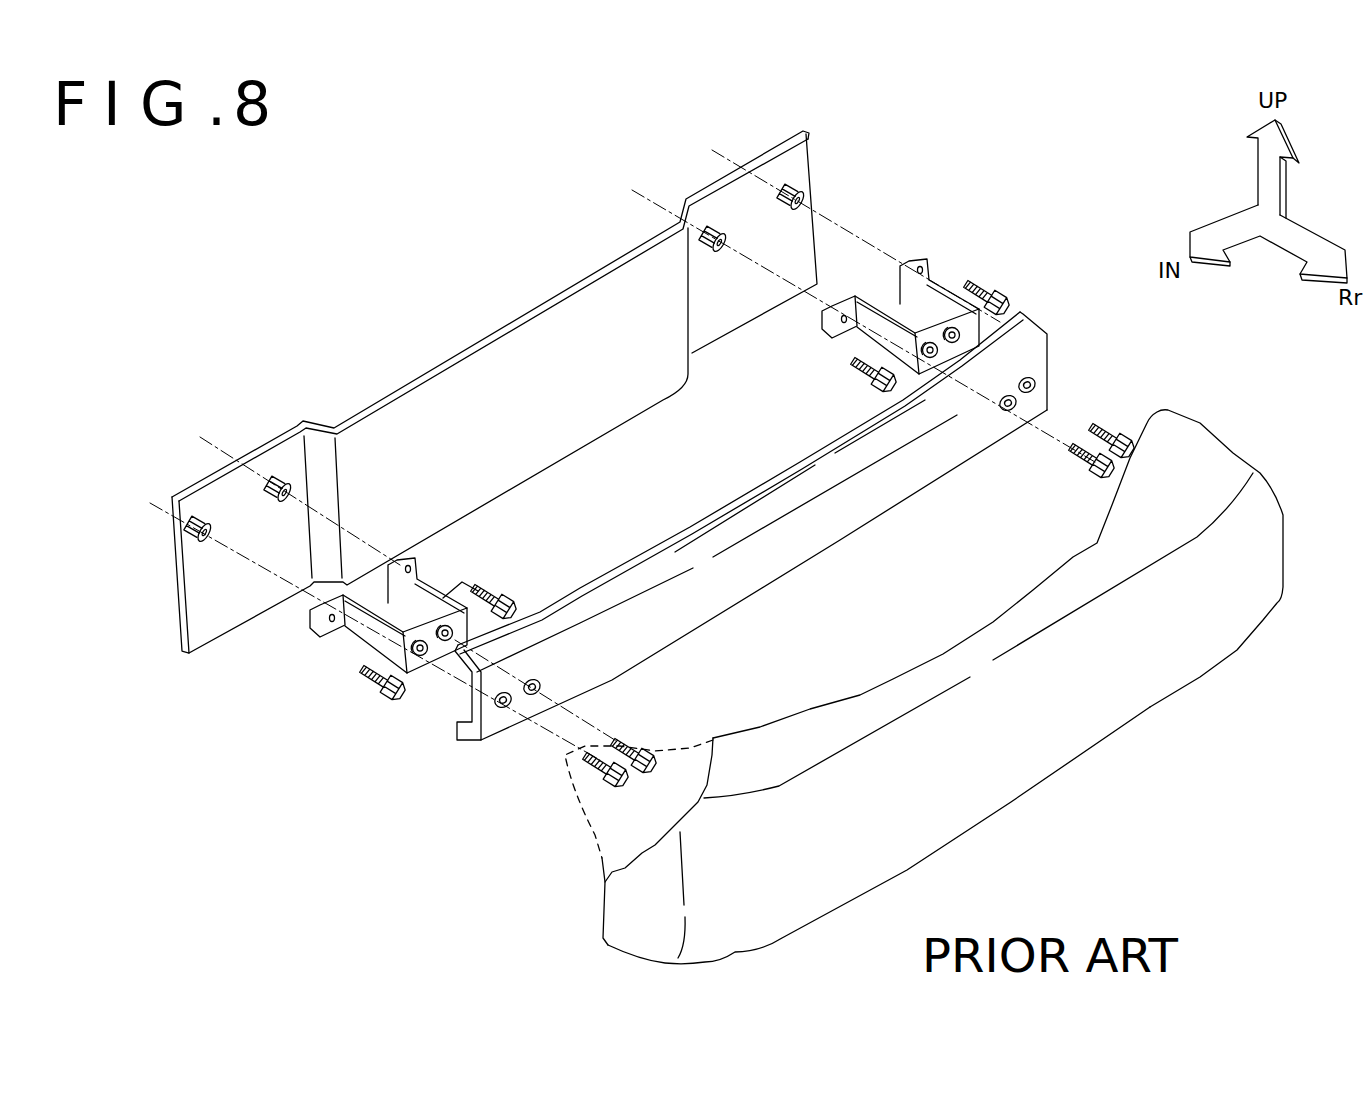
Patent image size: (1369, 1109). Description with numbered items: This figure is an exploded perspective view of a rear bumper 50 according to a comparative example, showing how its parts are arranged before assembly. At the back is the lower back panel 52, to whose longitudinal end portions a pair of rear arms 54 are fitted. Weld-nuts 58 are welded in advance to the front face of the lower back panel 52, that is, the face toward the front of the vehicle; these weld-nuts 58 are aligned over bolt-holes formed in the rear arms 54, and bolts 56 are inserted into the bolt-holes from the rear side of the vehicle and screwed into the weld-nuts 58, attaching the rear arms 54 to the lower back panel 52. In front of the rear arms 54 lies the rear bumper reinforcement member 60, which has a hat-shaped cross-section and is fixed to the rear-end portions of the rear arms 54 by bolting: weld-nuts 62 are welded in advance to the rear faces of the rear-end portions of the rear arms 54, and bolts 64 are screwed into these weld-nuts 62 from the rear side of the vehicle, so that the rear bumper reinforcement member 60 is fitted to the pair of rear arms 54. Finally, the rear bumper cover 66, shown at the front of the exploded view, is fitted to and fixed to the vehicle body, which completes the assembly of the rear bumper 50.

The rear bumper 50 is at (1085, 768).
The lower back panel 52 is at (470, 347).
The rear arm 54 is at (378, 636).
The bolt 56 is at (402, 709).
The weld-nut 58 is at (787, 190).
The rear bumper reinforcement member 60 is at (803, 558).
The weld-nut 62 is at (446, 642).
The bolt 64 is at (630, 742).
The rear bumper cover 66 is at (1012, 802).